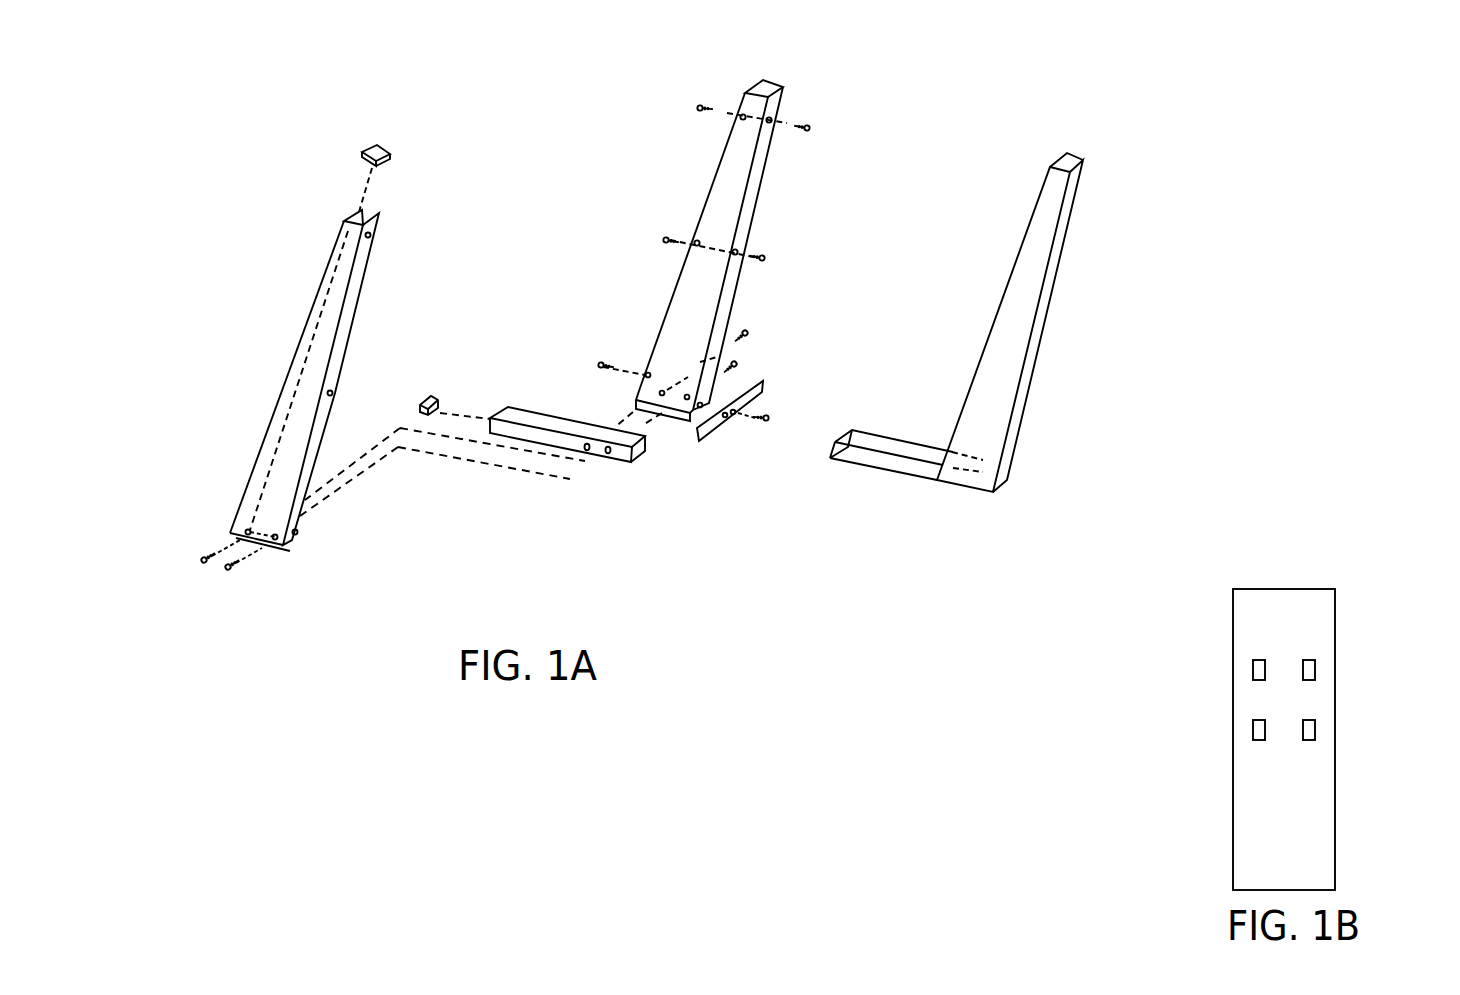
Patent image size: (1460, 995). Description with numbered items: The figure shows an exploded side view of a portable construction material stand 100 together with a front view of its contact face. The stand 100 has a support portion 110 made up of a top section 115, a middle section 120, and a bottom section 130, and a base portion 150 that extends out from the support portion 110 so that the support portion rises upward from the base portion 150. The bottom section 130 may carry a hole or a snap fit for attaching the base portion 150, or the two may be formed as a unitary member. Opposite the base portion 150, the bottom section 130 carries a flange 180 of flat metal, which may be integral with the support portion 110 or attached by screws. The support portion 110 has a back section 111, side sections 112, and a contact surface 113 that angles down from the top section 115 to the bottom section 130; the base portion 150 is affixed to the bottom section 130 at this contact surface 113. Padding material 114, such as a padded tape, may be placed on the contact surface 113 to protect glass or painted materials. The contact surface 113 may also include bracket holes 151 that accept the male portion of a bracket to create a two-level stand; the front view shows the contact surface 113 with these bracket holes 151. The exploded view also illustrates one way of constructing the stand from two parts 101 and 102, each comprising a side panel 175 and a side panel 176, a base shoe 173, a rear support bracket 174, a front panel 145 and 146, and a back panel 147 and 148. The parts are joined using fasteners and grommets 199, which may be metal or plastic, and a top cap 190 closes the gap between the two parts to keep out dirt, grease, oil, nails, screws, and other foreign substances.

In FIG. 1A, the portable construction material stand 100 is at (198, 125).
In FIG. 1B, the portable construction material stand 100 is at (1363, 550).
In FIG. 1A, the first part 101 is at (325, 377).
In FIG. 1A, the second part 102 is at (486, 351).
In FIG. 1A, the support portion 110 is at (1034, 322).
In FIG. 1B, the support portion 110 is at (1271, 739).
In FIG. 1A, the back section 111 is at (1020, 402).
In FIG. 1A, the side section 112 is at (1008, 348).
In FIG. 1A, the contact surface 113 is at (707, 217).
In FIG. 1B, the contact surface 113 is at (1305, 850).
In FIG. 1A, the padding material 114 is at (670, 307).
In FIG. 1A, the top section 115 is at (1084, 202).
In FIG. 1A, the middle section 120 is at (1047, 363).
In FIG. 1A, the bottom section 130 is at (1033, 450).
In FIG. 1A, the front panel 145 is at (307, 325).
In FIG. 1A, the front panel 146 is at (720, 167).
In FIG. 1A, the back panel 147 is at (339, 371).
In FIG. 1A, the back panel 148 is at (743, 227).
In FIG. 1A, the base portion 150 is at (560, 442).
In FIG. 1B, the bracket hole 151 is at (1310, 670).
In FIG. 1A, the base shoe 173 is at (672, 412).
In FIG. 1A, the rear support bracket 174 is at (760, 390).
In FIG. 1A, the side panel 175 is at (312, 373).
In FIG. 1A, the side panel 176 is at (732, 197).
In FIG. 1A, the flange 180 is at (273, 549).
In FIG. 1A, the top cap 190 is at (388, 156).
In FIG. 1A, the fasteners and grommets 199 is at (698, 108).